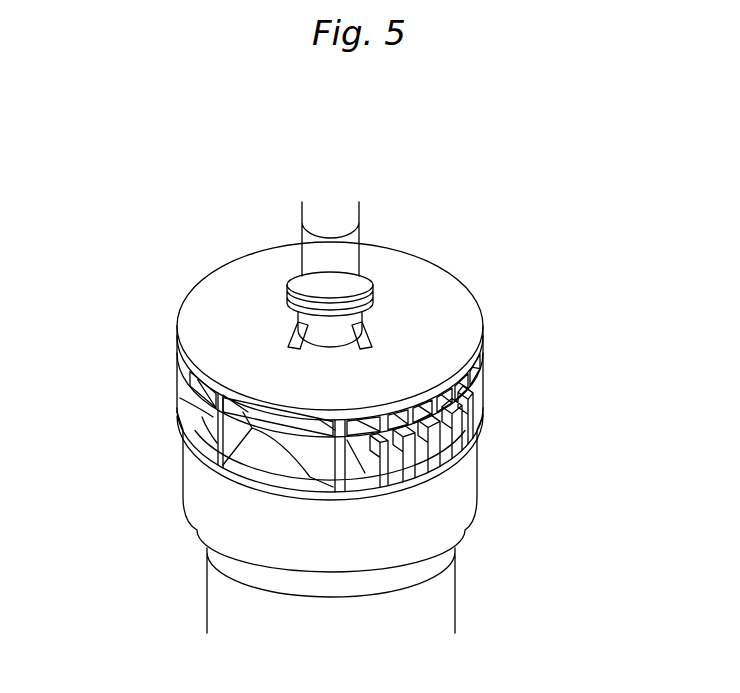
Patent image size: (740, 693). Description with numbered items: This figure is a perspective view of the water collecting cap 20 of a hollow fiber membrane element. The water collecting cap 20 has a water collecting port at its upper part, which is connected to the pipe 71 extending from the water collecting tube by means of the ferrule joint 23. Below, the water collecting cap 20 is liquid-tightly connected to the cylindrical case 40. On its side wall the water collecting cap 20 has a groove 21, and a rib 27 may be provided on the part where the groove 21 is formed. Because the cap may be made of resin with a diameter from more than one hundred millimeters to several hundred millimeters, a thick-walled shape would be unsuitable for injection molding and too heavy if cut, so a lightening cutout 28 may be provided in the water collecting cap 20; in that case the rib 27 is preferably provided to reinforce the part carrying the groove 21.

The water collecting cap 20 is at (210, 317).
The groove 21 is at (453, 407).
The ferrule joint 23 is at (289, 279).
The rib 27 is at (440, 452).
The lightening cutout 28 is at (364, 482).
The cylindrical case 40 is at (210, 625).
The pipe 71 is at (332, 213).